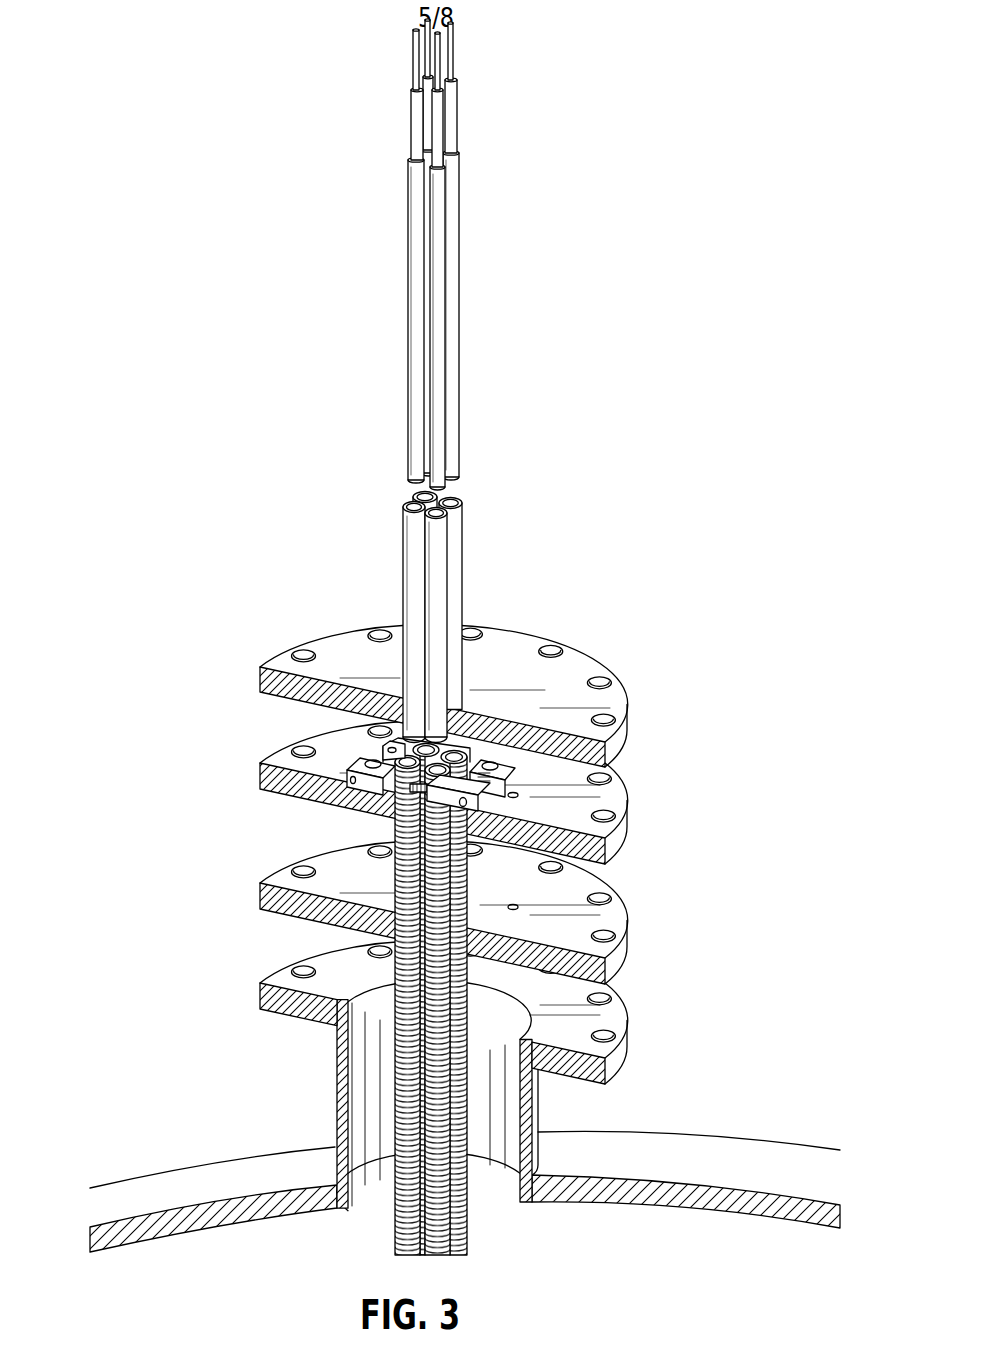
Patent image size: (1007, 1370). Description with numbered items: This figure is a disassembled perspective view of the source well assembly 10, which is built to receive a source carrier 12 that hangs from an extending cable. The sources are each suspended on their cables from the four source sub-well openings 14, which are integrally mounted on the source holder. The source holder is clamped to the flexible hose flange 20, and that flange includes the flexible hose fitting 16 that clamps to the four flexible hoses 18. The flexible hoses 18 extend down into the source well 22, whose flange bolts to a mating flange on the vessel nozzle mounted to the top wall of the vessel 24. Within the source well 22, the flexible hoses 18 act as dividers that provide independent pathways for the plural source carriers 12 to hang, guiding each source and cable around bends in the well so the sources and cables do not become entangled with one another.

The source well assembly 10 is at (128, 86).
The source carrier 12 is at (409, 224).
The source sub-well openings 14 is at (457, 545).
The flexible hose fitting 16 is at (372, 760).
The flexible hoses 18 is at (396, 1056).
The flexible hose flange 20 is at (621, 841).
The source well 22 is at (621, 951).
The vessel 24 is at (329, 1097).